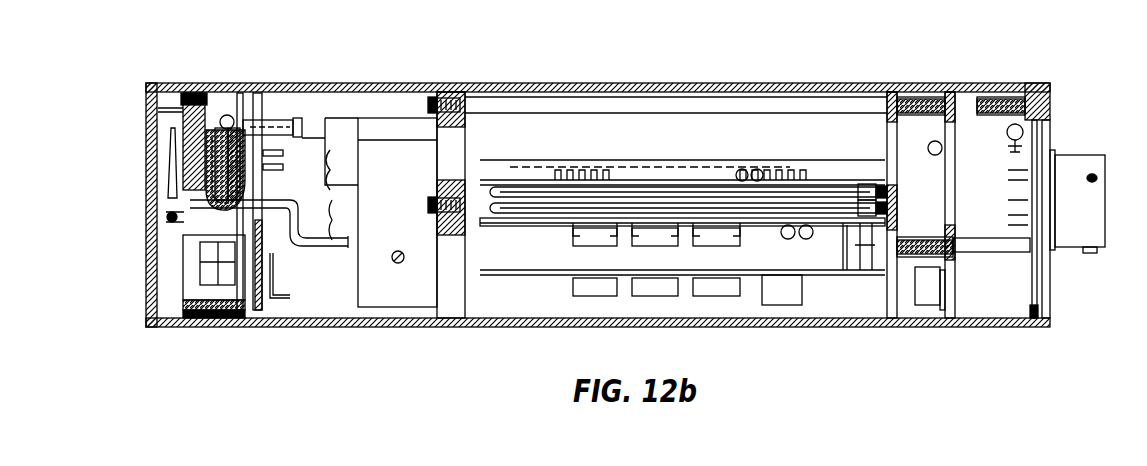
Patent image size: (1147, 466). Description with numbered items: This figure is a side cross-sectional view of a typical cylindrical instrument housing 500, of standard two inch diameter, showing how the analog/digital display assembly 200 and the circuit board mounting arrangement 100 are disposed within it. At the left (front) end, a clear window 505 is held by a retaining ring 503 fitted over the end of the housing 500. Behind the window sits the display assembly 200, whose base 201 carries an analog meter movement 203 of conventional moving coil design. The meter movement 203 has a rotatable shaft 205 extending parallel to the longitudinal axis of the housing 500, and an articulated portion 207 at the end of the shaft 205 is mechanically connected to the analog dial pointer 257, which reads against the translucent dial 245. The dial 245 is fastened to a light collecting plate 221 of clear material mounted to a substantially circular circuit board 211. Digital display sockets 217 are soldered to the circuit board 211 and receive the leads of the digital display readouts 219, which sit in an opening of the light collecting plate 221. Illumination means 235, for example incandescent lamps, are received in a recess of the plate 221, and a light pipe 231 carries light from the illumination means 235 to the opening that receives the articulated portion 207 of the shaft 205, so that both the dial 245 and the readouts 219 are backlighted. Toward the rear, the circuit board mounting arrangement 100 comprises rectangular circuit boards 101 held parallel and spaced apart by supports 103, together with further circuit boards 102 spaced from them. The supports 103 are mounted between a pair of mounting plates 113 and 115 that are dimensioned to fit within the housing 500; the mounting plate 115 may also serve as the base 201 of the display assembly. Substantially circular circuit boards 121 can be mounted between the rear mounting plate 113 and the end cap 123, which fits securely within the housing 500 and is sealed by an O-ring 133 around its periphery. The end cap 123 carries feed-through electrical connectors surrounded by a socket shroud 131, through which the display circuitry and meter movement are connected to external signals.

The circuit board mounting arrangement 100 is at (672, 126).
The circuit boards 101 is at (830, 207).
The circuit boards 102 is at (822, 276).
The supports 103 is at (530, 200).
The mounting plate 113 is at (890, 92).
The mounting plate 115 is at (452, 84).
The circuit boards 121 is at (950, 92).
The end cap 123 is at (1049, 298).
The socket shroud 131 is at (1088, 255).
The O-ring 133 is at (1037, 84).
The display assembly 200 is at (308, 112).
The base 201 is at (481, 124).
The analog meter movement 203 is at (391, 146).
The rotatable shaft 205 is at (325, 250).
The articulated portion 207 is at (178, 213).
The circuit board 211 is at (280, 256).
The digital display sockets 217 is at (250, 320).
The digital display readouts 219 is at (210, 320).
The light collecting plate 221 is at (190, 92).
The light pipe 231 is at (208, 117).
The illumination means 235 is at (230, 115).
The dial 245 is at (173, 115).
The analog dial pointer 257 is at (173, 166).
The instrument housing 500 is at (797, 80).
The retaining ring 503 is at (158, 326).
The clear window 505 is at (156, 276).